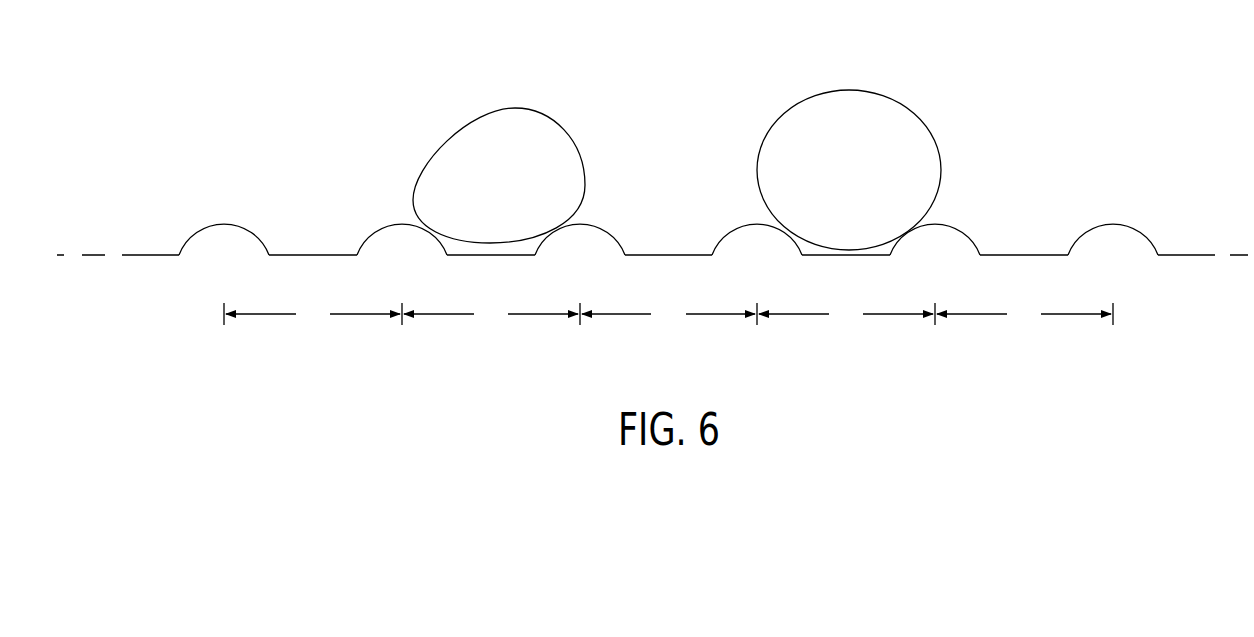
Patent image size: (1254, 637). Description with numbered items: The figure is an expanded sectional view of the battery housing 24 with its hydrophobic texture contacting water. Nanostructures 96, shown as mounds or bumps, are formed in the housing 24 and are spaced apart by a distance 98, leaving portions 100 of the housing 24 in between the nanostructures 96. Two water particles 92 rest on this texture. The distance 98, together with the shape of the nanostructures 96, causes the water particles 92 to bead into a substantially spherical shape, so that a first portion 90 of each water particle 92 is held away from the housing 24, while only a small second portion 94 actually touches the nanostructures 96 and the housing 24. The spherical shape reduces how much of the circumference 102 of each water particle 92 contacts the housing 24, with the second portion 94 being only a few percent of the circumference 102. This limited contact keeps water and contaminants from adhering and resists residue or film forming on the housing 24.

The housing 24 is at (680, 364).
The first portion of water particles 90 is at (482, 115).
The water particles 92 is at (532, 93).
The second portion of water particles 94 is at (432, 227).
The nanostructures 96 is at (223, 224).
The distance 98 is at (668, 314).
The portions in between the nanostructures 100 is at (312, 255).
The circumference of the water particles 102 is at (565, 128).